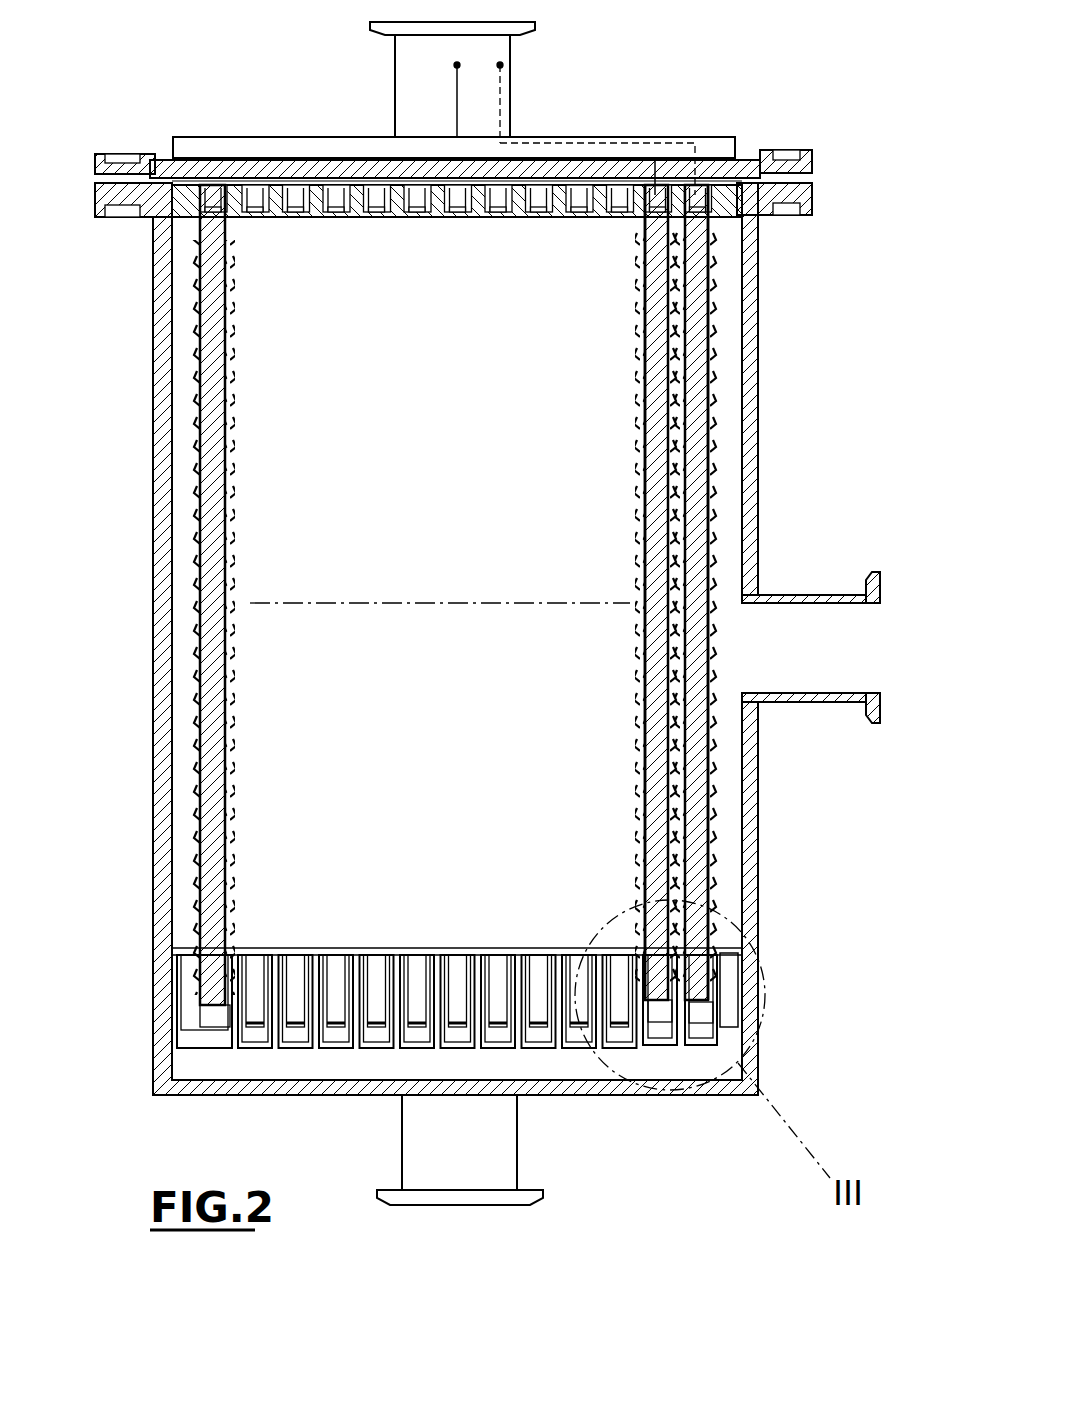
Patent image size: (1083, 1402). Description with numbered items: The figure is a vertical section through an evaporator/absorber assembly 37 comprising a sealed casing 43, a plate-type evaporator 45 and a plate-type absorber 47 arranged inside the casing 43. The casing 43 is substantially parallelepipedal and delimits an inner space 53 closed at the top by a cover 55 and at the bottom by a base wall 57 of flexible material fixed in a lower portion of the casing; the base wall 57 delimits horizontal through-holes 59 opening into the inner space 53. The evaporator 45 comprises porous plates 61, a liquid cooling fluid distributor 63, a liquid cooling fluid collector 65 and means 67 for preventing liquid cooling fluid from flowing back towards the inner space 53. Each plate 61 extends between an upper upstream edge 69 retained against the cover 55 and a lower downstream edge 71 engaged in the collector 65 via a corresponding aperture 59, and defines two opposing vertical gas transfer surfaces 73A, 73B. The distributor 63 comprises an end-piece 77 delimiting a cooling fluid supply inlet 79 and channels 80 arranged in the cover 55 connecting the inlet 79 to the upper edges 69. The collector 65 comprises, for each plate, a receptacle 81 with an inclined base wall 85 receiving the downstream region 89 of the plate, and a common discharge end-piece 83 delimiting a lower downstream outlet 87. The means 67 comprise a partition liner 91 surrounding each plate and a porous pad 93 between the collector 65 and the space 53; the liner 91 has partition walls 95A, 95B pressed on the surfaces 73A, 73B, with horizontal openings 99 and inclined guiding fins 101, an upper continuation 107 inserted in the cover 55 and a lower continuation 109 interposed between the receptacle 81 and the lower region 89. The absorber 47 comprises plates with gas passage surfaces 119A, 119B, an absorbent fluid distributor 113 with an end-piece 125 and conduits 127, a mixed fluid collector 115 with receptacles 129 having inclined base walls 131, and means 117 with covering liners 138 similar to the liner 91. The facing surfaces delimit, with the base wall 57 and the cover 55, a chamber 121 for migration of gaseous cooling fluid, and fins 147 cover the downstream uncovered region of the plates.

The assembly 37 is at (775, 85).
The sealed casing 43 is at (772, 425).
The plate-type evaporator 45 is at (632, 809).
The plate-type absorber 47 is at (725, 320).
The inner space 53 is at (422, 453).
The cover 55 is at (287, 172).
The base wall 57 is at (335, 948).
The through-holes 59 is at (455, 968).
The porous plates 61 is at (700, 900).
The liquid cooling fluid distributor 63 is at (445, 114).
The liquid cooling fluid collector 65 is at (666, 1052).
The means for preventing backflow 67 is at (632, 709).
The upper upstream edge 69 is at (645, 232).
The lower downstream edge 71 is at (692, 1005).
The gas transfer surface 73A is at (692, 530).
The gas transfer surface 73B is at (656, 402).
The end-piece 77 is at (415, 88).
The cooling fluid supply inlet 79 is at (455, 64).
The channels 80 is at (655, 150).
The receptacle 81 is at (672, 1035).
The discharge end-piece 83 is at (430, 1140).
The base wall 85 is at (652, 1035).
The lower downstream outlet 87 is at (450, 1205).
The downstream region 89 is at (662, 978).
The partition liner 91 is at (630, 560).
The porous pad 93 is at (630, 1035).
The partition wall 95A is at (677, 550).
The partition wall 95B is at (644, 503).
The horizontal openings 99 is at (650, 885).
The inclined guiding fin 101 is at (630, 850).
The upper continuation 107 is at (625, 212).
The lower continuation 109 is at (493, 948).
The absorbent fluid distributor 113 is at (595, 128).
The mixed fluid collector 115 is at (712, 1050).
The means for preventing backflow of mixed fluid 117 is at (722, 805).
The gas passage surface 119A is at (712, 650).
The gas passage surface 119B is at (712, 765).
The chamber 121 is at (670, 475).
The end-piece 125 is at (503, 65).
The conduits 127 is at (695, 143).
The receptacle 129 is at (704, 1022).
The base wall 131 is at (705, 1035).
The covering liner 138 is at (712, 858).
The fins 147 is at (712, 730).